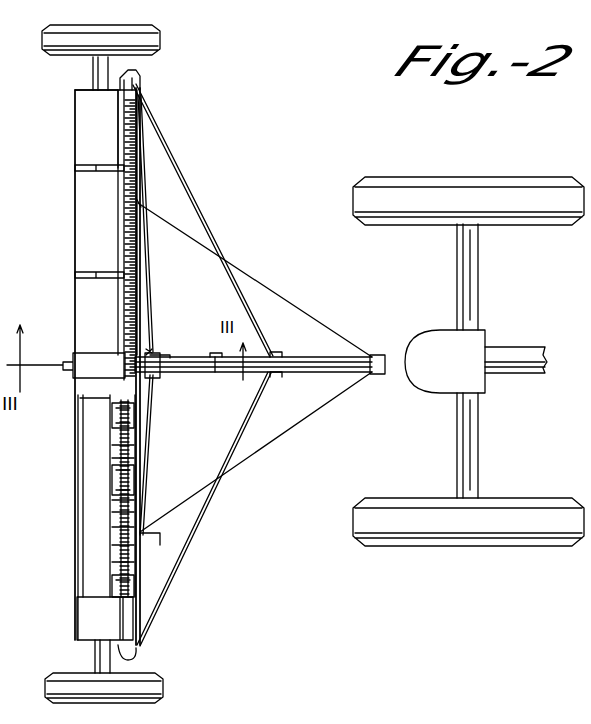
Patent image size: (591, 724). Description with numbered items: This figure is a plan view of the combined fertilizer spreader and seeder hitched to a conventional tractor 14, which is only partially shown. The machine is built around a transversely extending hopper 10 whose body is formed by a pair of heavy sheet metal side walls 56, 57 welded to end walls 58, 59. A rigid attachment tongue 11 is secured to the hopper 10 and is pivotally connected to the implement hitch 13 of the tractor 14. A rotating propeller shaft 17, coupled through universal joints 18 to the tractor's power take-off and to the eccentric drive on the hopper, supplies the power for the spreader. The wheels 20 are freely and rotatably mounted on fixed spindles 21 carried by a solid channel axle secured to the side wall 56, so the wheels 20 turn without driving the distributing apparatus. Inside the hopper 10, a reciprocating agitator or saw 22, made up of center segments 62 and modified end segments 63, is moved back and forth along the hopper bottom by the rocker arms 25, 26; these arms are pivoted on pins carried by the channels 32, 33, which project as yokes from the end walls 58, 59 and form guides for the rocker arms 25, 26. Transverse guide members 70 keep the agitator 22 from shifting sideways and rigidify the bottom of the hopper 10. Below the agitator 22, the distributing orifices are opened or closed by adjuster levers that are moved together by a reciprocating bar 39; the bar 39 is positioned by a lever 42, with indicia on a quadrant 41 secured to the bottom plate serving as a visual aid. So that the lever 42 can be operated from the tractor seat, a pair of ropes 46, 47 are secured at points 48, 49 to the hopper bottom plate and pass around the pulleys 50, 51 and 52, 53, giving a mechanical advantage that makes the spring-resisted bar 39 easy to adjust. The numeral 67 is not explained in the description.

The hopper 10 is at (96, 212).
The attachment tongue 11 is at (300, 355).
The implement hitch 13 is at (405, 380).
The tractor 14 is at (405, 526).
The propeller shaft 17 is at (220, 372).
The universal joints 18 is at (390, 340).
The wheels 20 is at (148, 37).
The spindles 21 is at (96, 70).
The agitator 22 is at (110, 554).
The rocker arm 25 is at (126, 650).
The rocker arm 26 is at (118, 80).
The channel 32 is at (116, 636).
The channel 33 is at (134, 74).
The reciprocating bar 39 is at (140, 582).
The quadrant 41 is at (150, 378).
The lever 42 is at (138, 352).
The rope 46 is at (330, 405).
The rope 47 is at (308, 313).
The rope attachment point 48 is at (141, 503).
The rope attachment point 49 is at (142, 230).
The pulley 50 is at (158, 355).
The pulley 51 is at (155, 551).
The pulley 52 is at (150, 350).
The pulley 53 is at (140, 203).
The side wall 56 is at (75, 135).
The side wall 57 is at (140, 170).
The end wall 58 is at (78, 635).
The end wall 59 is at (80, 92).
The center segments 62 is at (114, 415).
The end segments 63 is at (112, 588).
The middle sprocket 67 is at (112, 478).
The guide members 70 is at (78, 520).